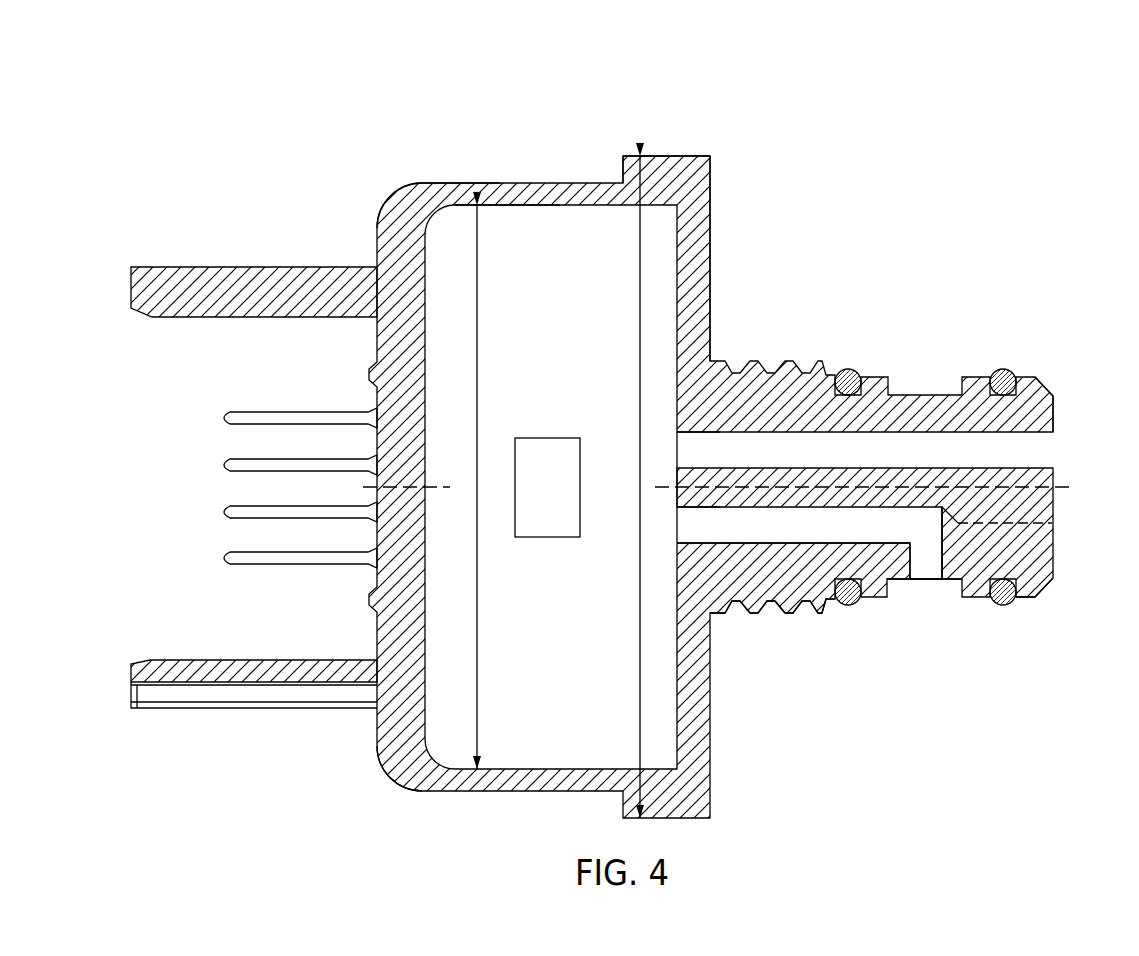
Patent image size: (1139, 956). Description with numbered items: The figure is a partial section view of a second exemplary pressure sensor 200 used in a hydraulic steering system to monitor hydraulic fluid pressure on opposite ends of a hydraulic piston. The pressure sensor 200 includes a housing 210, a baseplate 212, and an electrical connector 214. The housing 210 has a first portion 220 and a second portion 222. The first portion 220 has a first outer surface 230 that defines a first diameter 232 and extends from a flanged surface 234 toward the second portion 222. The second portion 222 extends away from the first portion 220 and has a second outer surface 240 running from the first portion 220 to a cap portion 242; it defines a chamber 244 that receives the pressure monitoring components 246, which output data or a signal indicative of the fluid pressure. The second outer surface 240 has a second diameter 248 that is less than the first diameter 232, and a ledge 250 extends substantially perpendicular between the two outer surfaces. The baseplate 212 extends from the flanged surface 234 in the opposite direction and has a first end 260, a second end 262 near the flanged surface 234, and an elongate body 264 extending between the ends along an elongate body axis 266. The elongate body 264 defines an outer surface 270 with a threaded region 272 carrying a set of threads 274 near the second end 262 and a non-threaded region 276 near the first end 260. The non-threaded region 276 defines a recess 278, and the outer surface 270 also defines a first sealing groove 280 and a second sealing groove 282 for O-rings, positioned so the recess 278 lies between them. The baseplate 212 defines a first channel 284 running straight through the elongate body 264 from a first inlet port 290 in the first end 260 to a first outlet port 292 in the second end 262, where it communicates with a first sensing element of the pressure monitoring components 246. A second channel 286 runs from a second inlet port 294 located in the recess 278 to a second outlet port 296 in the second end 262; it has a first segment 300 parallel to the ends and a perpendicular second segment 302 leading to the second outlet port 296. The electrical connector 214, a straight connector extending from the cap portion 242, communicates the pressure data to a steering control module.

The second exemplary pressure sensor 200 is at (623, 452).
The housing 210 is at (706, 466).
The baseplate 212 is at (896, 475).
The electrical connector 214 is at (203, 250).
The first portion 220 is at (677, 168).
The second portion 222 is at (456, 190).
The first outer surface 230 is at (663, 156).
The first diameter 232 is at (637, 326).
The flanged surface 234 is at (712, 250).
The second outer surface 240 is at (508, 186).
The cap portion 242 is at (392, 222).
The chamber 244 is at (447, 740).
The pressure monitoring components 246 is at (534, 499).
The second diameter 248 is at (480, 606).
The ledge 250 is at (620, 172).
The first end 260 is at (1055, 408).
The second end 262 is at (677, 555).
The elongate body 264 is at (824, 600).
The elongate body axis 266 is at (1060, 487).
The outer surface 270 is at (984, 603).
The threaded region 272 is at (747, 615).
The set of threads 274 is at (773, 612).
The non-threaded region 276 is at (1030, 601).
The recess 278 is at (893, 590).
The first sealing groove 280 is at (976, 378).
The second sealing groove 282 is at (856, 371).
The first channel 284 is at (1030, 447).
The second channel 286 is at (925, 581).
The first inlet port 290 is at (1053, 470).
The first outlet port 292 is at (678, 430).
The second inlet port 294 is at (944, 582).
The second outlet port 296 is at (677, 508).
The first segment 300 is at (910, 550).
The second segment 302 is at (769, 535).